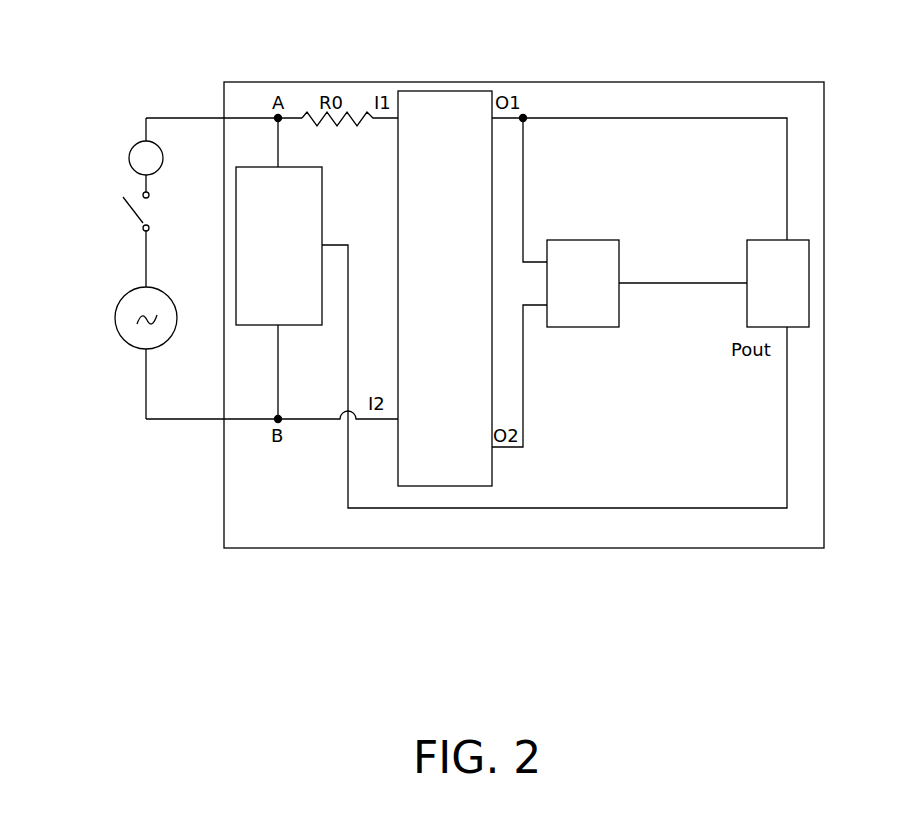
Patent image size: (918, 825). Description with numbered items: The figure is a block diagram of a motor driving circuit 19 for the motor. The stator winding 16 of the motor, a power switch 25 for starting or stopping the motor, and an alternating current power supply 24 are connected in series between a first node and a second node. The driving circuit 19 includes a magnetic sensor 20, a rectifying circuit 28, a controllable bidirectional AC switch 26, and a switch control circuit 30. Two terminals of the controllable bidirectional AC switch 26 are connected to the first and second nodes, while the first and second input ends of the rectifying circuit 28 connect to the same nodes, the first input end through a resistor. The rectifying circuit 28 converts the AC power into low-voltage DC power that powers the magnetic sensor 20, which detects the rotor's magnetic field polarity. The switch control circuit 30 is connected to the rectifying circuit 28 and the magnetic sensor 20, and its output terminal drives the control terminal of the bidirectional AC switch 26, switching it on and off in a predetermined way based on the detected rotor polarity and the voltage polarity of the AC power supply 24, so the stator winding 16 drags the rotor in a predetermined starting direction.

The stator winding 16 is at (132, 146).
The power switch 25 is at (131, 210).
The alternating current power supply 24 is at (163, 347).
The controllable bidirectional alternating current switch 26 is at (305, 167).
The rectifying circuit 28 is at (438, 91).
The motor driving circuit 19 is at (627, 82).
The magnetic sensor 20 is at (572, 240).
The switch control circuit 30 is at (773, 240).